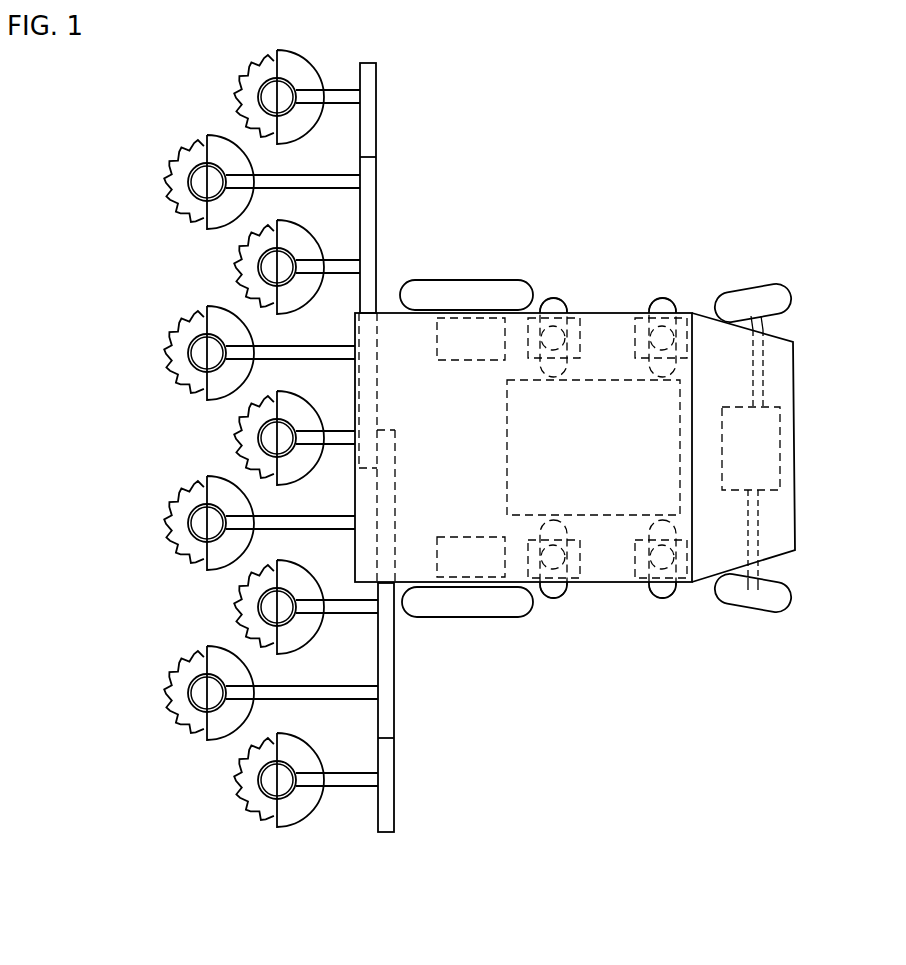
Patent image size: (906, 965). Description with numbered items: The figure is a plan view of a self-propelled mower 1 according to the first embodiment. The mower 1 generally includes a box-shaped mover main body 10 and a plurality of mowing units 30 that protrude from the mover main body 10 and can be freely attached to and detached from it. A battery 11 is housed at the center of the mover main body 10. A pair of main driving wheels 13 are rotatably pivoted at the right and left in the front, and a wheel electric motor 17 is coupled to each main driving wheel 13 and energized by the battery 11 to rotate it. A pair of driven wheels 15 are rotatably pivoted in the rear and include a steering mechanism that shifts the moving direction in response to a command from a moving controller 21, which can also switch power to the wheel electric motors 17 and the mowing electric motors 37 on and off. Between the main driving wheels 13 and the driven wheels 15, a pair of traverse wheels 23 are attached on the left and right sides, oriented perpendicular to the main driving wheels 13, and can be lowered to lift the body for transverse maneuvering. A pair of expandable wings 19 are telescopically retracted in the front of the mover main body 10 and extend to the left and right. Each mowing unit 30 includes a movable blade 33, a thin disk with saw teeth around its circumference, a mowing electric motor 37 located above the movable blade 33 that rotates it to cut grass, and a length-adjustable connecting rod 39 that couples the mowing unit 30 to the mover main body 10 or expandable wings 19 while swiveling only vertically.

The self-propelled mower 1 is at (660, 143).
The mover main body 10 is at (617, 713).
The battery 11 is at (580, 460).
The main driving wheels 13 is at (482, 293).
The driven wheels 15 is at (752, 300).
The wheel electric motor 17 is at (458, 351).
The expandable wings 19 is at (368, 137).
The moving controller 21 is at (738, 463).
The traverse wheels 23 is at (555, 297).
The mowing unit 30 is at (216, 501).
The movable blade 33 is at (270, 782).
The mowing electric motor 37 is at (272, 822).
The connecting rod 39 is at (355, 778).